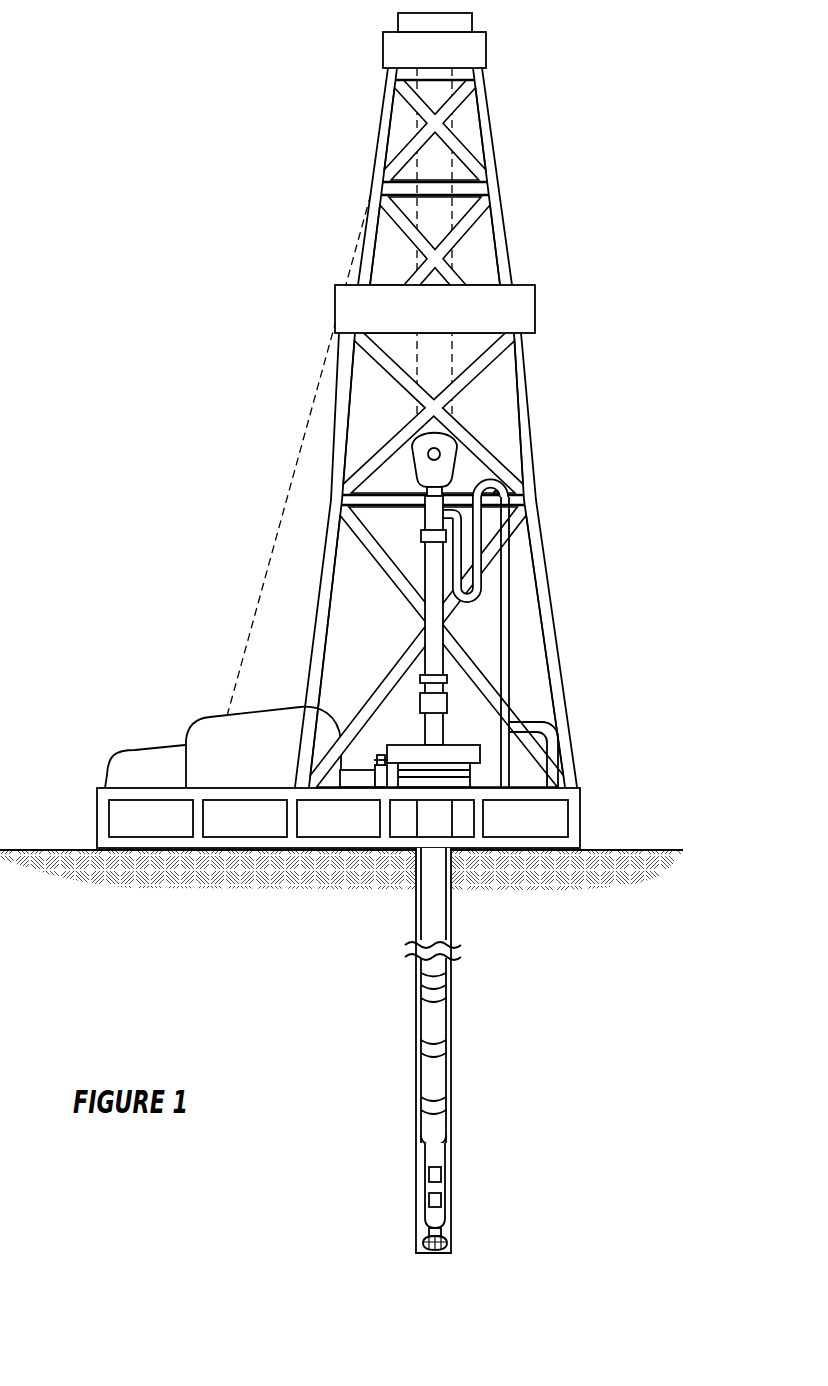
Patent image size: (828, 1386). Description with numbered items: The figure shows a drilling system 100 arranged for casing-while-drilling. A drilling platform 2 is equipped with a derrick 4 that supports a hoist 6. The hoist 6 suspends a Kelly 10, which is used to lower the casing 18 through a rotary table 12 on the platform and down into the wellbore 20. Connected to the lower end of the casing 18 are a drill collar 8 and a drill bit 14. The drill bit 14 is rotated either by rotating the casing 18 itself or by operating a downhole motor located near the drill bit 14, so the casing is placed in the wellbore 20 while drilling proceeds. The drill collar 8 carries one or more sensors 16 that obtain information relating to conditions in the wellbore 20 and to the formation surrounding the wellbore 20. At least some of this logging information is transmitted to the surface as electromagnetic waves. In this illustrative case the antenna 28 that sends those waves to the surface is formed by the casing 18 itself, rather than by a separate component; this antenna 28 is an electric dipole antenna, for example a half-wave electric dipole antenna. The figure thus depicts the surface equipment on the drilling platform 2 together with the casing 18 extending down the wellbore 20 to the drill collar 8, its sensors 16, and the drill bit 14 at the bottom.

The drilling system 100 is at (213, 108).
The drilling platform 2 is at (97, 818).
The derrick 4 is at (510, 249).
The hoist 6 is at (412, 470).
The Kelly 10 is at (412, 585).
The rotary table 12 is at (397, 745).
The casing 18 is at (419, 930).
The wellbore 20 is at (452, 972).
The antenna 28 is at (457, 979).
The drill collar 8 is at (425, 1212).
The sensors 16 is at (441, 1200).
The drill bit 14 is at (447, 1240).